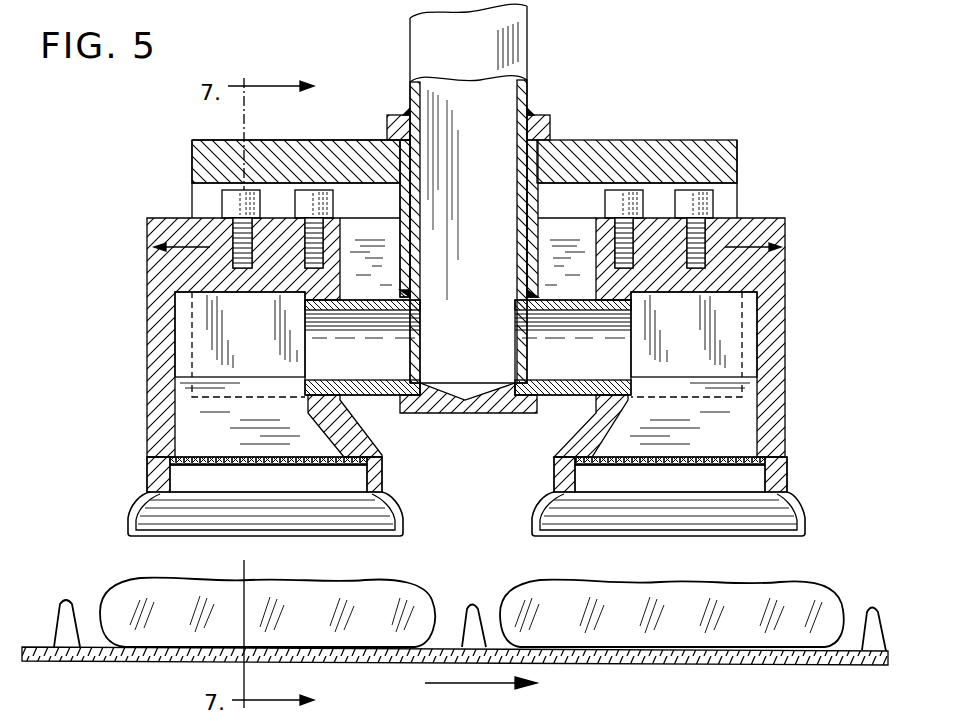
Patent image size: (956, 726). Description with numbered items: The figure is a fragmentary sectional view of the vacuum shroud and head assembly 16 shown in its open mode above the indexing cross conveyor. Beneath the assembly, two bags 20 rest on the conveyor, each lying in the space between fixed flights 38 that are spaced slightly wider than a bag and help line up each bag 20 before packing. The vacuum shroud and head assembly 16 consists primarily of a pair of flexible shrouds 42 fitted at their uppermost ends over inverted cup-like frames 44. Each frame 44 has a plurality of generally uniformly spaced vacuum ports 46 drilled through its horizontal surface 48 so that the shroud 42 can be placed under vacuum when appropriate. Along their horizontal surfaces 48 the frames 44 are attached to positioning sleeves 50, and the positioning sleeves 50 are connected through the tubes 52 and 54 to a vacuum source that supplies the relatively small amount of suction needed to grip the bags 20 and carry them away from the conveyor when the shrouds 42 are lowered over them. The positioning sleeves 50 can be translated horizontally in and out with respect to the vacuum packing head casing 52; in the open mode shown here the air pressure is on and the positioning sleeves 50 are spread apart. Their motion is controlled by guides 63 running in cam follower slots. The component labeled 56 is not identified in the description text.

The vacuum shroud and head assembly 16 is at (797, 268).
The bag 20 is at (152, 586).
The fixed flight 38 is at (60, 612).
The flexible shroud 42 is at (140, 510).
The inverted cup-like frame 44 is at (155, 472).
The vacuum port 46 is at (205, 457).
The horizontal surface 48 is at (380, 441).
The positioning sleeve 50 is at (158, 408).
The tube 52 is at (420, 321).
The tube 54 is at (530, 40).
The mounting plate 56 is at (570, 155).
The guide 63 is at (295, 192).